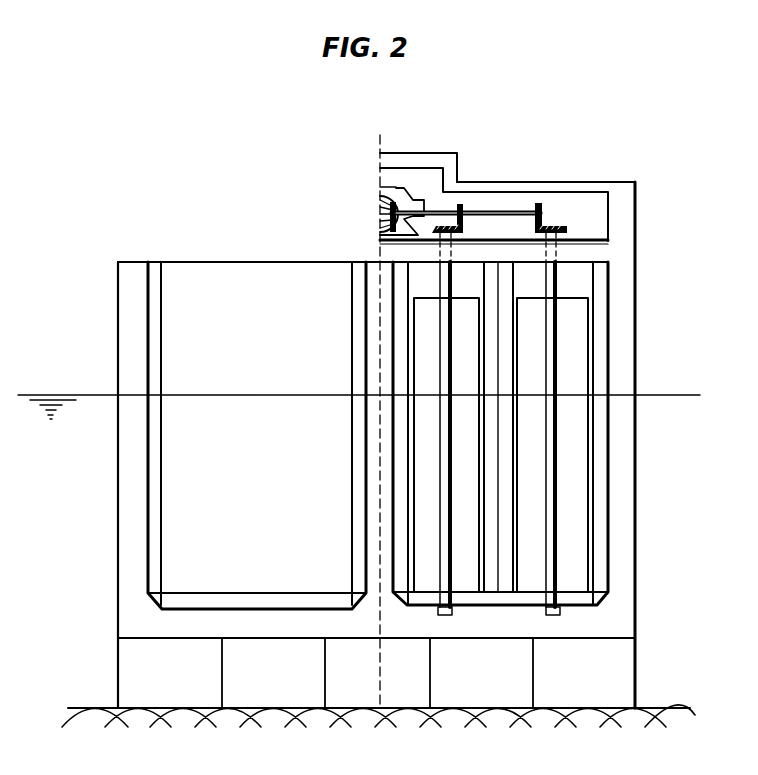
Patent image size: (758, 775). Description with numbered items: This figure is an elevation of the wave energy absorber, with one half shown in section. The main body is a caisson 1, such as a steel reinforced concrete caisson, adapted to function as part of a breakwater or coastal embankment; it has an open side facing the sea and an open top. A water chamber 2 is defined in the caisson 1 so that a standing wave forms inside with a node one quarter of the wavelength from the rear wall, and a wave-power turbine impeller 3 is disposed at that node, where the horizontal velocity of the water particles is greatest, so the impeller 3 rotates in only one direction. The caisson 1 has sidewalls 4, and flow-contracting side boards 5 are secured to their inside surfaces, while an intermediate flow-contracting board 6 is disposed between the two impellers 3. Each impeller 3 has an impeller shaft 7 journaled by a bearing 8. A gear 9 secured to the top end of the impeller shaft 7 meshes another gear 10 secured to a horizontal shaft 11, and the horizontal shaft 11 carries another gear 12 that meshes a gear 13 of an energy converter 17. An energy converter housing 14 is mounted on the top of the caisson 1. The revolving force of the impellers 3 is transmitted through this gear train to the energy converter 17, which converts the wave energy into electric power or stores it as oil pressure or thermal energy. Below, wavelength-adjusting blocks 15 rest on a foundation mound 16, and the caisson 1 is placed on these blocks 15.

The caisson 1 is at (253, 262).
The water chamber 2 is at (202, 282).
The wave-power turbine impeller 3 is at (577, 327).
The sidewalls 4 is at (121, 333).
The flow-contracting side boards 5 is at (598, 527).
The intermediate flow-contracting board 6 is at (500, 433).
The impeller shaft 7 is at (550, 285).
The bearing 8 is at (445, 615).
The gear 9 is at (566, 226).
The gear 10 is at (538, 205).
The horizontal shaft 11 is at (510, 218).
The gear 12 is at (410, 204).
The gear 13 is at (394, 200).
The energy converter housing 14 is at (458, 182).
The wavelength-adjusting blocks 15 is at (612, 664).
The foundation mound 16 is at (378, 731).
The energy converter 17 is at (448, 178).